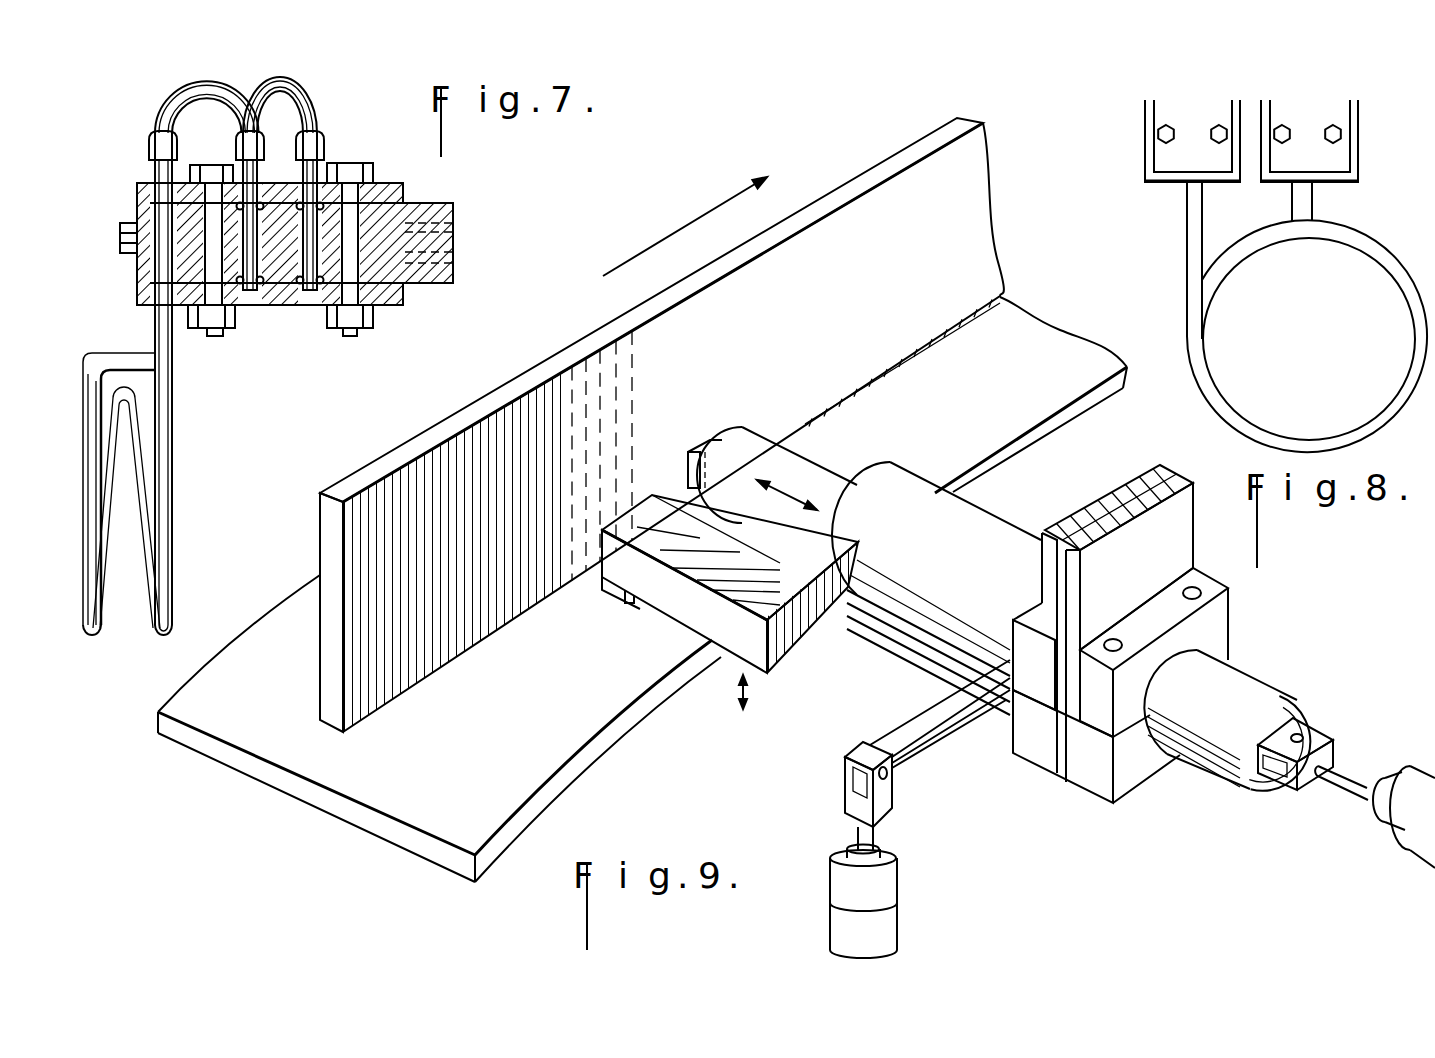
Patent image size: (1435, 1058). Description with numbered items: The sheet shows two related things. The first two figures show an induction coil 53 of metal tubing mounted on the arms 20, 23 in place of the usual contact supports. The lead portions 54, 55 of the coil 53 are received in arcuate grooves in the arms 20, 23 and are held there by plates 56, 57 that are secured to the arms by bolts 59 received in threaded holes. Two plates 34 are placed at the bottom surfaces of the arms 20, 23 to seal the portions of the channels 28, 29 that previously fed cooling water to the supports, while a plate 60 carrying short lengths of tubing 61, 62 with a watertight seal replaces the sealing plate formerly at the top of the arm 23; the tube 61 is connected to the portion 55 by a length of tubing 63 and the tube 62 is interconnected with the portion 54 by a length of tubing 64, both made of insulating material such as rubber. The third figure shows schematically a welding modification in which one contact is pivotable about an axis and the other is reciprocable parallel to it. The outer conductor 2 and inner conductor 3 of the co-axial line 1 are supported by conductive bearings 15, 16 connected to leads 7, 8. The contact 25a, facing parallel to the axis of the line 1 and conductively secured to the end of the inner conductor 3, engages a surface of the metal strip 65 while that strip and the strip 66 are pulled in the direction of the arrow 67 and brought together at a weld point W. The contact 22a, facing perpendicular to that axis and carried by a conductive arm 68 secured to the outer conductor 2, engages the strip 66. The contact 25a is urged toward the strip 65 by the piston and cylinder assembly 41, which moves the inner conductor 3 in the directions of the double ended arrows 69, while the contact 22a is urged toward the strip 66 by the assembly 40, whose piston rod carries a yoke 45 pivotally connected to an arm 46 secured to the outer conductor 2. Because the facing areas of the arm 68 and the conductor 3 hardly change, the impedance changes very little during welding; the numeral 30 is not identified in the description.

In FIG. 9, the co-axial line 1 is at (1134, 618).
In FIG. 9, the outer conductor 2 is at (930, 653).
In FIG. 9, the inner conductor 3 is at (837, 473).
In FIG. 9, the lead 7 is at (1183, 536).
In FIG. 9, the lead 8 is at (1138, 470).
In FIG. 9, the conductive bearing 15 is at (1016, 628).
In FIG. 9, the conductive bearing 16 is at (1219, 612).
In FIG. 8, the arm 20 is at (1146, 128).
In FIG. 9, the contact 22a is at (618, 598).
In FIG. 7, the arm 23 is at (440, 205).
In FIG. 8, the arm 23 is at (1359, 120).
In FIG. 9, the contact 25a is at (703, 447).
In FIG. 7, the channel 28 is at (456, 212).
In FIG. 7, the channel 29 is at (440, 282).
In FIG. 7, the bolt 30 is at (213, 165).
In FIG. 7, the plate 34 is at (402, 305).
In FIG. 8, the plate 34 is at (1146, 181).
In FIG. 9, the piston and cylinder assembly 40 is at (907, 925).
In FIG. 9, the piston and cylinder assembly 41 is at (1406, 859).
In FIG. 9, the yoke 45 is at (1326, 742).
In FIG. 9, the arm 46 is at (943, 738).
In FIG. 7, the induction coil 53 is at (173, 468).
In FIG. 8, the induction coil 53 is at (1389, 261).
In FIG. 8, the lead portion 54 is at (1186, 196).
In FIG. 7, the lead portion 55 is at (173, 338).
In FIG. 8, the lead portion 55 is at (1314, 195).
In FIG. 8, the plate 56 is at (1154, 162).
In FIG. 7, the plate 57 is at (137, 300).
In FIG. 8, the plate 57 is at (1351, 160).
In FIG. 7, the bolt 59 is at (118, 236).
In FIG. 8, the bolt 59 is at (1218, 124).
In FIG. 7, the plate 60 is at (404, 184).
In FIG. 7, the tube 61 is at (258, 158).
In FIG. 7, the tube 62 is at (319, 152).
In FIG. 7, the tubing 63 is at (182, 100).
In FIG. 7, the tubing 64 is at (286, 96).
In FIG. 9, the metal plate or strip 65 is at (485, 620).
In FIG. 9, the metal plate or strip 66 is at (415, 818).
In FIG. 9, the arrow 67 is at (672, 242).
In FIG. 9, the conductive arm 68 is at (797, 643).
In FIG. 9, the double ended arrows 69 is at (787, 488).
In FIG. 9, the weld point W is at (822, 405).